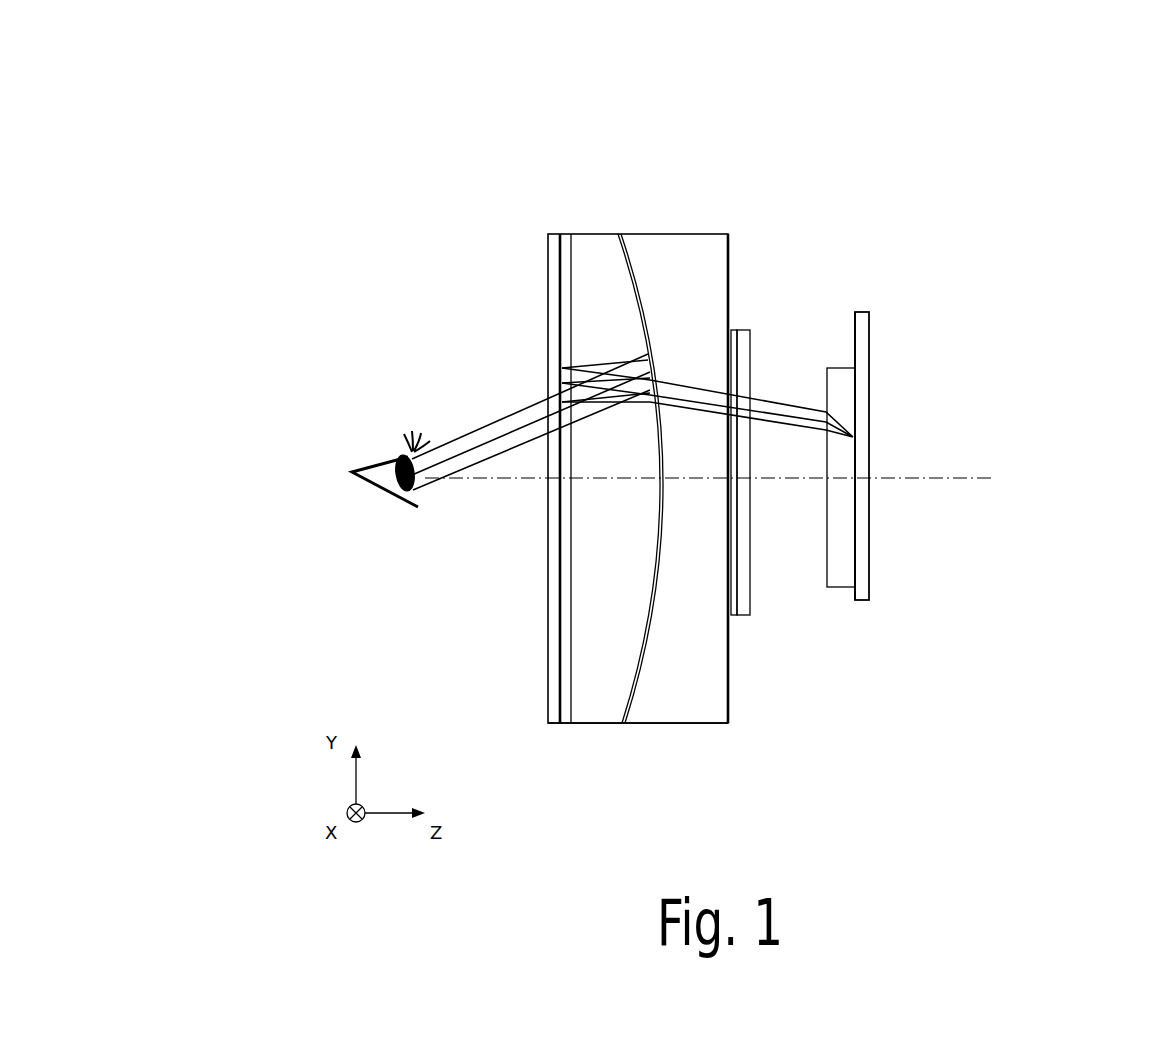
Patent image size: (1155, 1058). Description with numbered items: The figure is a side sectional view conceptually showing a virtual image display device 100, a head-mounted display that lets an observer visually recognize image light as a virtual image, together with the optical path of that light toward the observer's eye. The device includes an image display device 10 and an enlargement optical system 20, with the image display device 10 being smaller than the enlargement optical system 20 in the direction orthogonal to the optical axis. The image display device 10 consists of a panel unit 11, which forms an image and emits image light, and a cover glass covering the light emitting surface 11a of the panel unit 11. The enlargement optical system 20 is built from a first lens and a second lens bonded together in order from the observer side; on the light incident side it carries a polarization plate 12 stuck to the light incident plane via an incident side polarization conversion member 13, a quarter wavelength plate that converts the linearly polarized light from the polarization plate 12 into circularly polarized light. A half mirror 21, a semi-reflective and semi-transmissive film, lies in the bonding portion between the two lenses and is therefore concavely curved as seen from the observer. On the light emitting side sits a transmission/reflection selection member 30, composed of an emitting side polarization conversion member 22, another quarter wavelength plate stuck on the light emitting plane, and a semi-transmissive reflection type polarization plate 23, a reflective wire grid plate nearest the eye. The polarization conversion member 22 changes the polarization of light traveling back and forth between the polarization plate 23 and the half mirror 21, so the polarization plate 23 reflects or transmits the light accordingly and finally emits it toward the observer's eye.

The virtual image display device 100 is at (1134, 63).
The image display device 10 is at (920, 330).
The panel unit 11 is at (862, 432).
The light emitting surface 11a is at (855, 460).
The polarization plate 12 is at (743, 330).
The incident side polarization conversion member 13 is at (733, 330).
The enlargement optical system 20 is at (668, 172).
The half mirror 21 is at (652, 630).
The emitting side polarization conversion member 22 is at (565, 234).
The semi-transmissive reflection type polarization plate 23 is at (553, 234).
The transmission/reflection selection member 30 is at (560, 187).